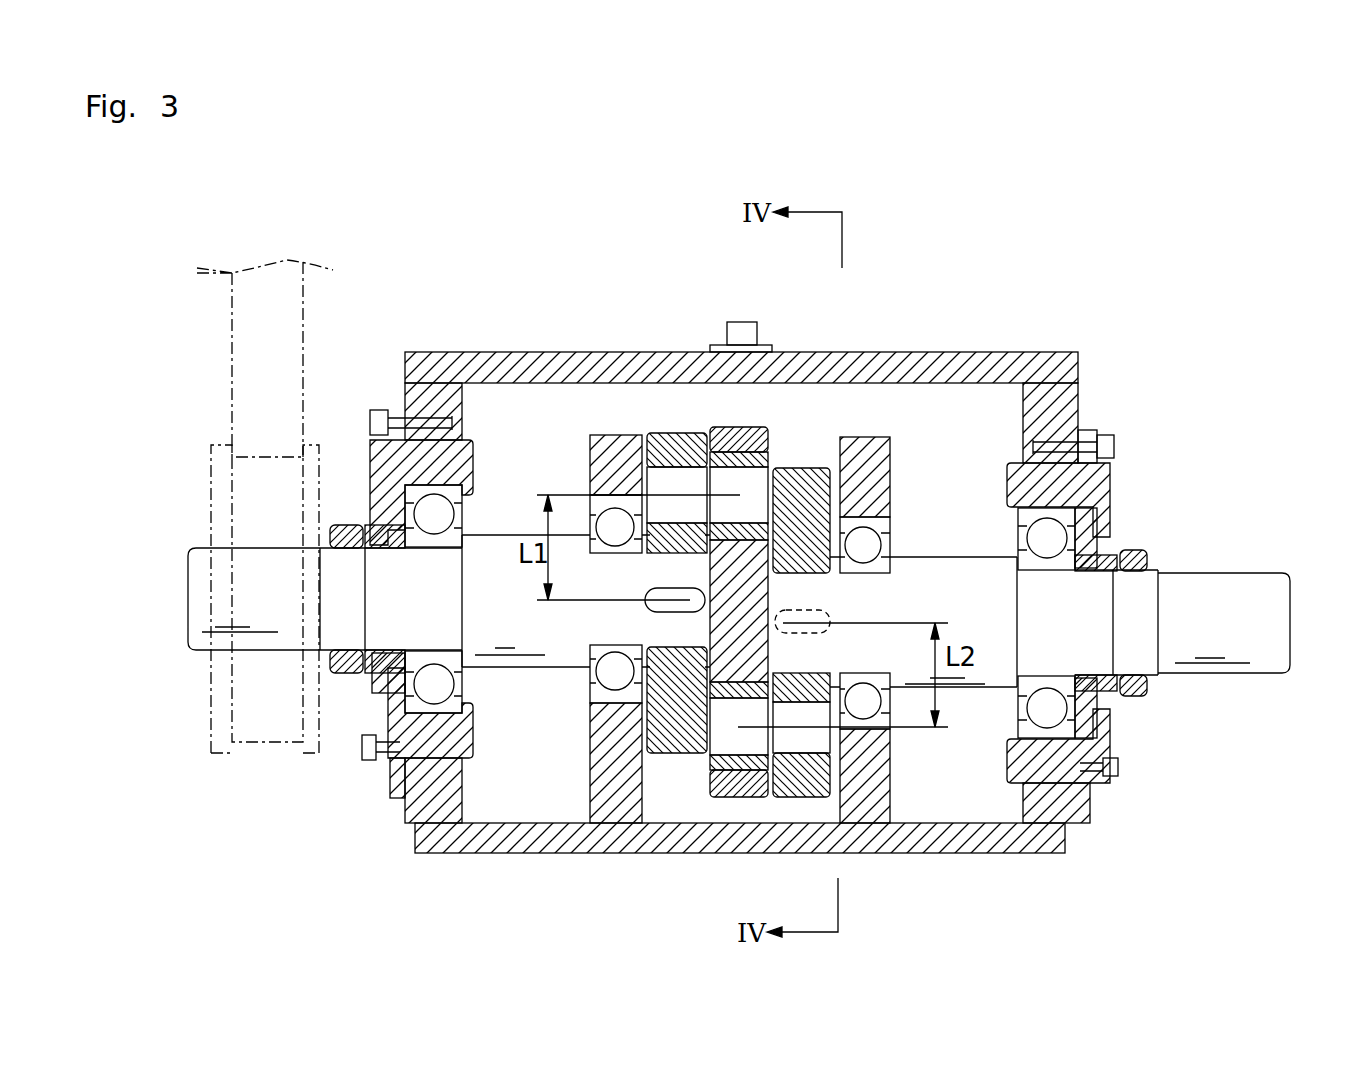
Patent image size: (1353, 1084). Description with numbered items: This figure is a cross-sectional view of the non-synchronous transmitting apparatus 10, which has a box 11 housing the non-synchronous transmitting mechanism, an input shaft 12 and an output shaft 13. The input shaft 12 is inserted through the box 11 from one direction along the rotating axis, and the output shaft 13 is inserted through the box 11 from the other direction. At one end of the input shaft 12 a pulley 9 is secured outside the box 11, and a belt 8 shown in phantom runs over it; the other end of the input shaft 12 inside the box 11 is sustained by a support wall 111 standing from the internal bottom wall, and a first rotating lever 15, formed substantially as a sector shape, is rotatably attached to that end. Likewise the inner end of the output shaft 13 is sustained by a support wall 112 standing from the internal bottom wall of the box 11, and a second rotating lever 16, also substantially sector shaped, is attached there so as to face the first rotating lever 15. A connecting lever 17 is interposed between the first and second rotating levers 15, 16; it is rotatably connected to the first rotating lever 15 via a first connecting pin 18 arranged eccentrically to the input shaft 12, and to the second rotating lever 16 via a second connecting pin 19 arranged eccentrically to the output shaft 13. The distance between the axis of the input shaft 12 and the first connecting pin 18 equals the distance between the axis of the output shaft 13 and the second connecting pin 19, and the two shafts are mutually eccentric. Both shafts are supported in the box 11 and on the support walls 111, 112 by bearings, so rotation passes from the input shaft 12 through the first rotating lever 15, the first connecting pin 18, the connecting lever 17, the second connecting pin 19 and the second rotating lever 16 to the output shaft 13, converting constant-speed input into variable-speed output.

The belt 8 is at (285, 375).
The pulley 9 is at (220, 507).
The non-synchronous transmitting apparatus 10 is at (877, 303).
The box 11 is at (897, 355).
The input shaft 12 is at (200, 617).
The output shaft 13 is at (1222, 597).
The first rotating lever 15 is at (660, 458).
The second rotating lever 16 is at (800, 470).
The connecting lever 17 is at (755, 437).
The first connecting pin 18 is at (693, 482).
The second connecting pin 19 is at (722, 737).
The support wall 111 is at (603, 437).
The support wall 112 is at (890, 468).